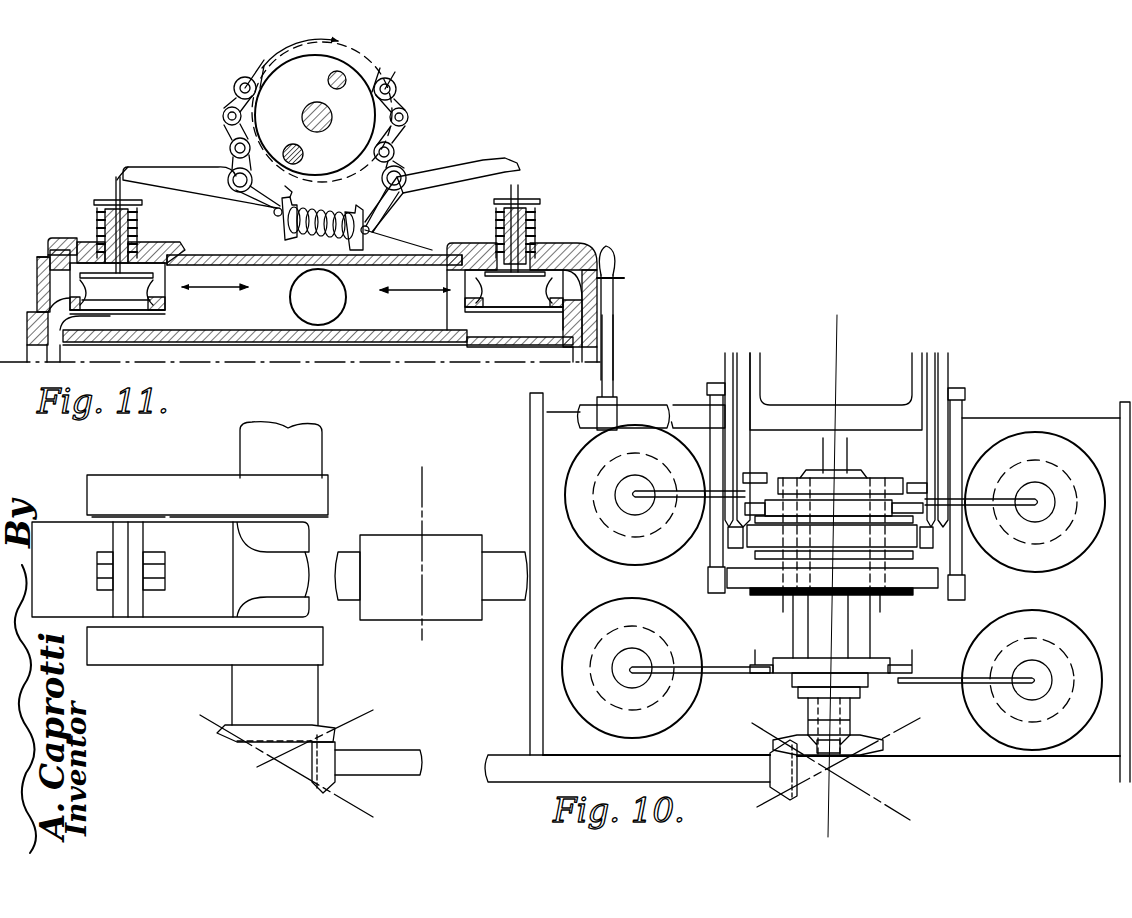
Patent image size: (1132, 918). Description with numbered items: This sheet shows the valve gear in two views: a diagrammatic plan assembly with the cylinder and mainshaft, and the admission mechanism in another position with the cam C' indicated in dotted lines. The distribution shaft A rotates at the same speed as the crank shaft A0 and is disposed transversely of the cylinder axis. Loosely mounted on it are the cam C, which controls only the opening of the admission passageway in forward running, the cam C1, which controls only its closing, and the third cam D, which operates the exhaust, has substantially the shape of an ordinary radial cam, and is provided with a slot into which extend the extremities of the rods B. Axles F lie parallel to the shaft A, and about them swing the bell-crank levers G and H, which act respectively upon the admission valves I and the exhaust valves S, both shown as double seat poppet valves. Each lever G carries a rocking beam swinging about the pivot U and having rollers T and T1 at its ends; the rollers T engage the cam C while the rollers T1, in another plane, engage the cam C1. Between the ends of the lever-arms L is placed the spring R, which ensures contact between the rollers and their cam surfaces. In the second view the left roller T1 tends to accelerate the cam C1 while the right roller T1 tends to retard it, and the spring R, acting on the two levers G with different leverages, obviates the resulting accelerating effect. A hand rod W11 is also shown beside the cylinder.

In FIG. 11, the distribution shaft A is at (322, 118).
In FIG. 10, the distribution shaft A is at (838, 460).
In FIG. 11, the crank shaft A0 is at (308, 458).
In FIG. 11, the rods B is at (313, 70).
In FIG. 11, the cam C is at (277, 209).
In FIG. 10, the cam C is at (872, 484).
In FIG. 11, the cam C1 is at (352, 70).
In FIG. 10, the cam C1 is at (776, 503).
In FIG. 11, the rollers T is at (230, 148).
In FIG. 11, the rollers T1 is at (236, 87).
In FIG. 11, the pivot U is at (222, 115).
In FIG. 11, the axles F is at (275, 208).
In FIG. 11, the bell-crank levers G is at (180, 168).
In FIG. 10, the bell-crank levers G is at (688, 496).
In FIG. 11, the lever-arm L is at (268, 201).
In FIG. 11, the spring R is at (370, 230).
In FIG. 11, the admission valves I is at (127, 297).
In FIG. 10, the admission valves I is at (614, 490).
In FIG. 11, the hand rod W11 is at (612, 302).
In FIG. 10, the hand rod W11 is at (607, 372).
In FIG. 10, the exhaust valves S is at (612, 666).
In FIG. 10, the bell-crank levers H is at (712, 680).
In FIG. 10, the third cam D is at (790, 662).